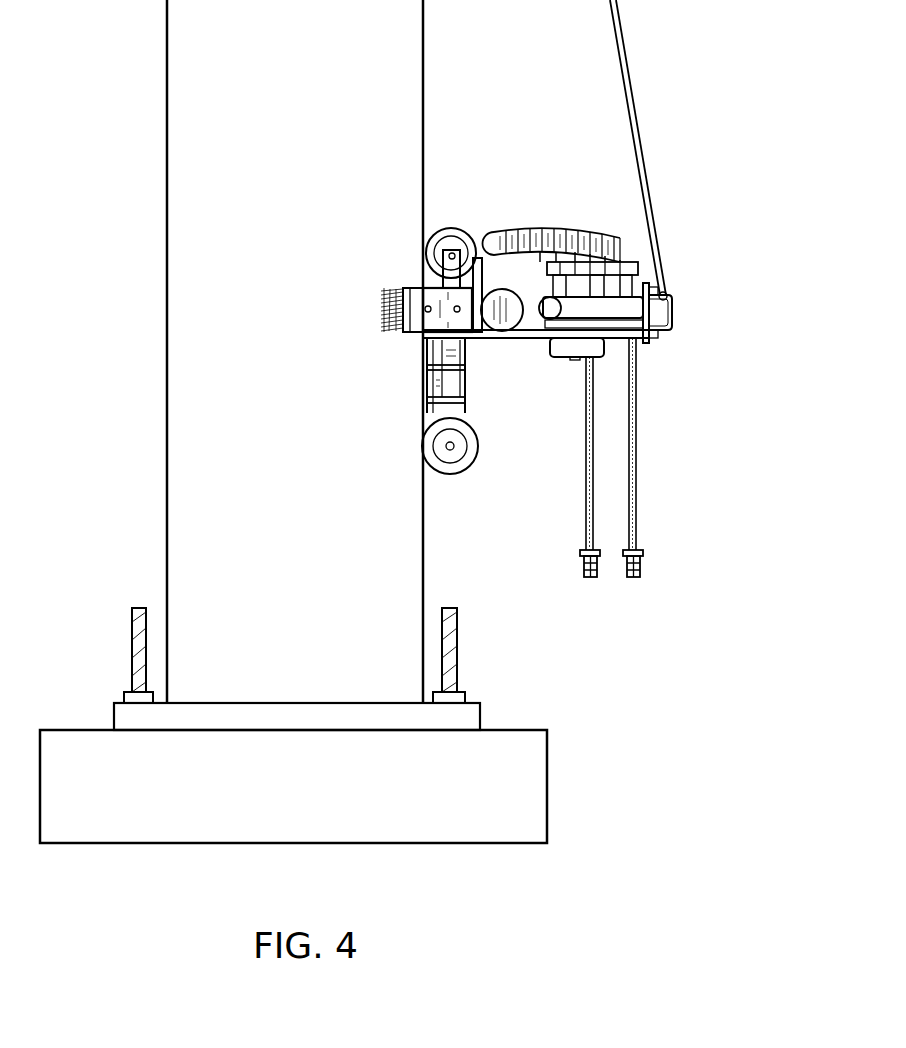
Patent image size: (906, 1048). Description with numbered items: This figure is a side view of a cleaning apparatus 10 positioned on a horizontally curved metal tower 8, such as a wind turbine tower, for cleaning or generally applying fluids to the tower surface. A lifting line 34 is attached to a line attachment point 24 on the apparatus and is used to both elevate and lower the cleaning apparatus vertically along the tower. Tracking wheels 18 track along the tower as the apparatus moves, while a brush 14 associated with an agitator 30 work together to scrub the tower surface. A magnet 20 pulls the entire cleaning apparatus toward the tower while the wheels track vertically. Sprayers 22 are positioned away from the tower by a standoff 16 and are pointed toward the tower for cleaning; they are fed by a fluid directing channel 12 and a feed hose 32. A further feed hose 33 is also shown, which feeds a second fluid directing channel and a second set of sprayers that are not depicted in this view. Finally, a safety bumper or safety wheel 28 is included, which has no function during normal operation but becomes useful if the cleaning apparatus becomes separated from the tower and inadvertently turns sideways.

The horizontally curved metal tower 8 is at (305, 598).
The cleaning apparatus 10 is at (678, 214).
The fluid directing channel 12 is at (617, 308).
The brush 14 is at (402, 292).
The standoff 16 is at (527, 340).
The tracking wheels 18 is at (437, 462).
The magnet 20 is at (434, 355).
The sprayers 22 is at (505, 231).
The line attachment point 24 is at (674, 306).
The safety bumper or safety wheel 28 is at (577, 350).
The agitator 30 is at (500, 290).
The feed hose 32 is at (636, 448).
The feed hose 33 is at (595, 487).
The lifting line 34 is at (627, 76).